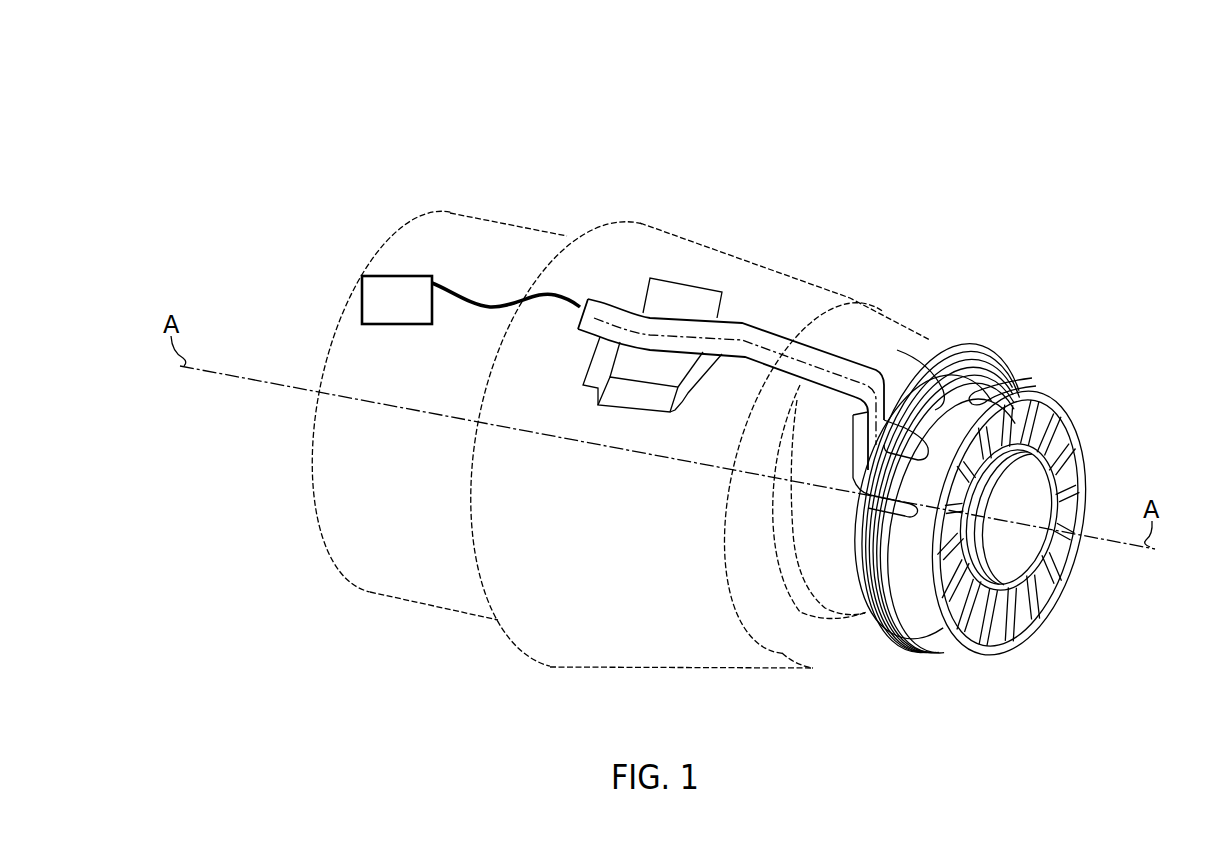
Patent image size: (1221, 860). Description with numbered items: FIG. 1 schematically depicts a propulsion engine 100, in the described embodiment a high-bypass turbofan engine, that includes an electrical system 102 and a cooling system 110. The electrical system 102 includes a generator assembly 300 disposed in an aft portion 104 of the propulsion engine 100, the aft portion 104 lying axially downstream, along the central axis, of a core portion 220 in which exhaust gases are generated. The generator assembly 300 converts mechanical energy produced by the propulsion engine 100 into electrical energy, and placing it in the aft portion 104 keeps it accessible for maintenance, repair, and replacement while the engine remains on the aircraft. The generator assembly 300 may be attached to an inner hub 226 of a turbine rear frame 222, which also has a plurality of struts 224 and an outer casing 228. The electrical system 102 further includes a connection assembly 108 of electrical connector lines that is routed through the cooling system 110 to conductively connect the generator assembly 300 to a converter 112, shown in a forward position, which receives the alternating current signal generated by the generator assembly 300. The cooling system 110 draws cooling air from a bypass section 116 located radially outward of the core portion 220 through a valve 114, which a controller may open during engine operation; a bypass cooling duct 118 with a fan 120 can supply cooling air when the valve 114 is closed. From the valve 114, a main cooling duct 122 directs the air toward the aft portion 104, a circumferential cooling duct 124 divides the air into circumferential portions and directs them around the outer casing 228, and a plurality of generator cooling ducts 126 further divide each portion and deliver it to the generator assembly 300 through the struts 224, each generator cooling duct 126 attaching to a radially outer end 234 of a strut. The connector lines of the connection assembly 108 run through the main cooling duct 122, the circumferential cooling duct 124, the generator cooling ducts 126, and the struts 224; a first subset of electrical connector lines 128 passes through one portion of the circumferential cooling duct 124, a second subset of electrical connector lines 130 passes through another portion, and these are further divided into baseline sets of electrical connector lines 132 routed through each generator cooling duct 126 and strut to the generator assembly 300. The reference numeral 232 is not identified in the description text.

The propulsion engine 100 is at (153, 132).
The electrical system 102 is at (574, 133).
The aft portion 104 is at (973, 182).
The connection assembly 108 is at (482, 300).
The cooling system 110 is at (797, 317).
The converter 112 is at (381, 325).
The valve 114 is at (660, 287).
The bypass section 116 is at (667, 103).
The bypass cooling duct 118 is at (583, 386).
The fan 120 is at (667, 413).
The main cooling duct 122 is at (747, 332).
The circumferential cooling duct 124 is at (920, 330).
The generator cooling ducts 126 is at (1030, 373).
The first subset of electrical connector lines 128 is at (960, 344).
The second subset of electrical connector lines 130 is at (850, 458).
The baseline sets of electrical connector lines 132 is at (870, 440).
The core portion 220 is at (659, 689).
The turbine rear frame 222 is at (1067, 390).
The struts 224 is at (1043, 593).
The inner hub 226 is at (1010, 592).
The outer casing 228 is at (978, 386).
The hub 232 is at (1057, 490).
The radially outer end 234 is at (897, 370).
The generator assembly 300 is at (1147, 484).